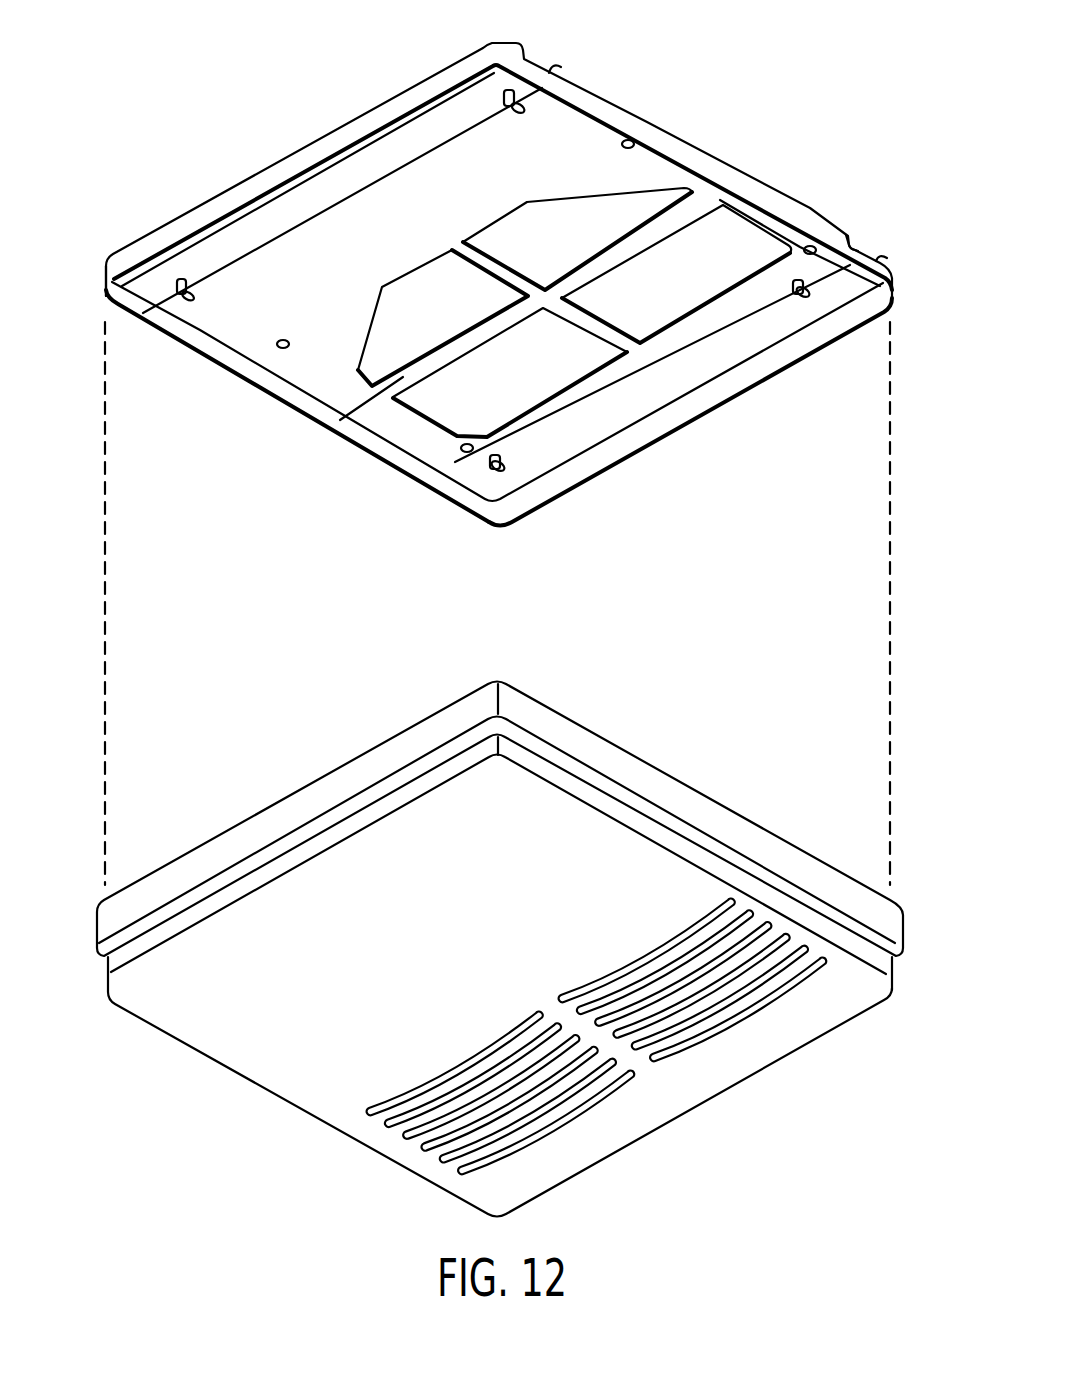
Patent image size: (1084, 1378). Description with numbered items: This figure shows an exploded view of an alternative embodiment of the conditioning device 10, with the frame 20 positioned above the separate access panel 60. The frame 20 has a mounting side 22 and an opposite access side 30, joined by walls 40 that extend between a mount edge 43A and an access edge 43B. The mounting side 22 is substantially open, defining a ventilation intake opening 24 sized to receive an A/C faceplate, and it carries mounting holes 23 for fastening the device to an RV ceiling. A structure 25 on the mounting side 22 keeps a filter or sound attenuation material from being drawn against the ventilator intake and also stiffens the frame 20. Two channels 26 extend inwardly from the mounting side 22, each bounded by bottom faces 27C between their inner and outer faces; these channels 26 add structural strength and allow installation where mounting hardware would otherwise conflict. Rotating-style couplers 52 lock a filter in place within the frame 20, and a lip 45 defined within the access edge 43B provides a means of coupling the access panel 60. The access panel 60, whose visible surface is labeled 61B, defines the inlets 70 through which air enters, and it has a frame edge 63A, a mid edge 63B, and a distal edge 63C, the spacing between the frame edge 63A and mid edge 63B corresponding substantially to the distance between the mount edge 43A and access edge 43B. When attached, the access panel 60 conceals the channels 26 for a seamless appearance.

The conditioning device 10 is at (112, 200).
The frame 20 is at (745, 142).
The mounting side 22 is at (285, 365).
The mounting holes 23 is at (292, 345).
The ventilation intake opening 24 is at (410, 421).
The structure 25 is at (346, 398).
The channels 26 is at (869, 245).
The bottom faces 27C is at (458, 98).
The access side 30 is at (218, 375).
The walls 40 is at (305, 153).
The mount edge 43A is at (893, 262).
The access edge 43B is at (843, 333).
The lip 45 is at (105, 290).
The couplers 52 is at (182, 298).
The access panel 60 is at (518, 951).
The housing surface 61B is at (521, 866).
The frame edge 63A is at (863, 883).
The mid edge 63B is at (900, 910).
The distal edge 63C is at (889, 973).
The inlets 70 is at (750, 1033).